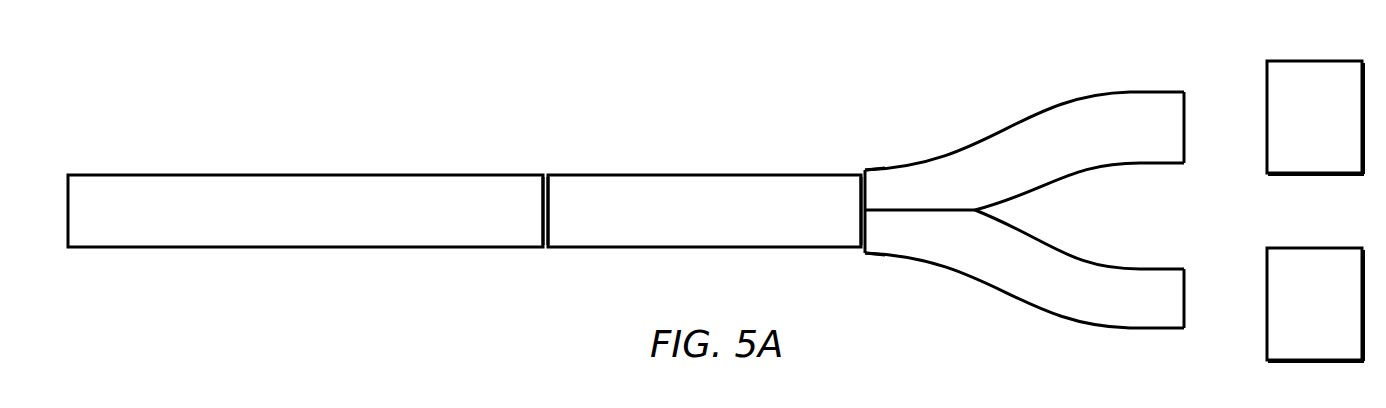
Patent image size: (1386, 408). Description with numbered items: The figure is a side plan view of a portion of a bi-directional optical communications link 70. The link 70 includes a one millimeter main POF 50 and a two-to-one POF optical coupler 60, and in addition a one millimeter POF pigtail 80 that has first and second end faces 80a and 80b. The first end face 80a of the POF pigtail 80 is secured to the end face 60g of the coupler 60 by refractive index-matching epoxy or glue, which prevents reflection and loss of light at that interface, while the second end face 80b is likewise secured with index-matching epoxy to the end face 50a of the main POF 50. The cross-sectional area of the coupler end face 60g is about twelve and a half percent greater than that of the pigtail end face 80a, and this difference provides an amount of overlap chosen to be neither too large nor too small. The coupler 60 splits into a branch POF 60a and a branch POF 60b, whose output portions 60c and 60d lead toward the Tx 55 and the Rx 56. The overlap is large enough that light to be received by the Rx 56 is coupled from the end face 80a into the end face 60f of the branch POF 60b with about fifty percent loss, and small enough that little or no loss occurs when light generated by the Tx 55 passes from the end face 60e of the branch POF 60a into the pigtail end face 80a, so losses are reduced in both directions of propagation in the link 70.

The bi-directional optical communications link 70 is at (403, 87).
The main POF 50 is at (360, 150).
The end face of the main POF 50a is at (546, 190).
The POF pigtail 80 is at (710, 138).
The first end face of the POF pigtail 80a is at (866, 187).
The second end face of the POF pigtail 80b is at (546, 228).
The 2-to-1 POF optical coupler 60 is at (1142, 60).
The branch POF 60a is at (1051, 113).
The branch POF 60b is at (1032, 301).
The first branch output end 60c is at (1186, 117).
The second branch output end 60d is at (1186, 296).
The end face of the branch POF 60a 60e is at (869, 172).
The end face of the branch POF 60b 60f is at (866, 241).
The end face of the coupler 60g is at (862, 240).
The Tx 55 is at (1301, 146).
The Rx 56 is at (1301, 333).